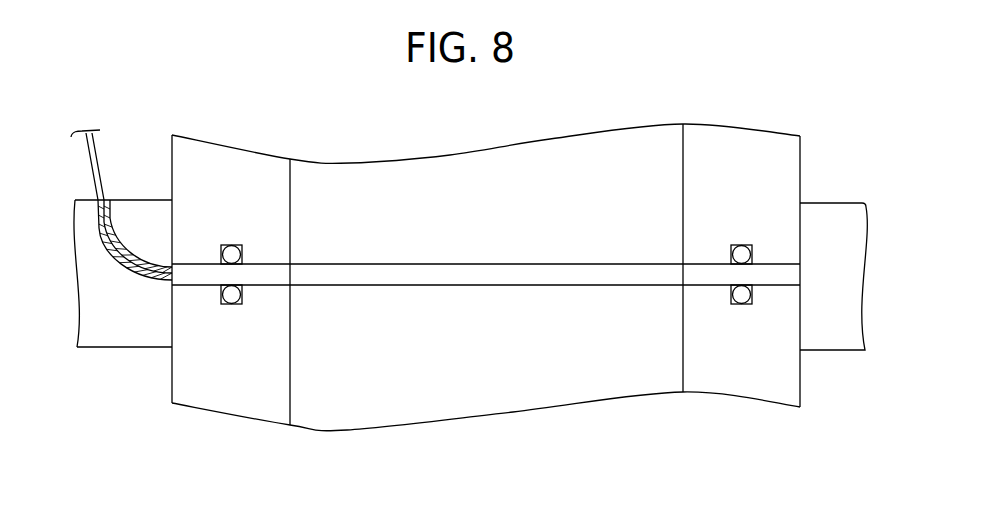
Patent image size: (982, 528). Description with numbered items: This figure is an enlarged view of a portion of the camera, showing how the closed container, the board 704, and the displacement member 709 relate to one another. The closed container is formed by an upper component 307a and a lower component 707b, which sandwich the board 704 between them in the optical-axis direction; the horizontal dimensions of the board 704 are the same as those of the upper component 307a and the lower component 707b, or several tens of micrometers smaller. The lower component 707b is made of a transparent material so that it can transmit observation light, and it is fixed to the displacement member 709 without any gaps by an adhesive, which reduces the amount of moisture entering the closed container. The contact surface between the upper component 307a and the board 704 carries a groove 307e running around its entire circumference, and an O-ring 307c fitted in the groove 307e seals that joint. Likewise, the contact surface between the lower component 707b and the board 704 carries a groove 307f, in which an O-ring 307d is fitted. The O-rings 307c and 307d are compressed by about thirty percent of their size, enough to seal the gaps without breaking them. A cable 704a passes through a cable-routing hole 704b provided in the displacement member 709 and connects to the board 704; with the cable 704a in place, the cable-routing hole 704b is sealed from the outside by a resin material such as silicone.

The board 704 is at (565, 276).
The cable 704a is at (97, 157).
The cable-routing hole 704b is at (120, 275).
The upper component 307a is at (197, 172).
The O-ring 307c is at (234, 251).
The O-ring 307d is at (236, 291).
The groove 307e is at (240, 245).
The groove 307f is at (233, 294).
The lower component 707b is at (247, 383).
The displacement member 709 is at (835, 218).